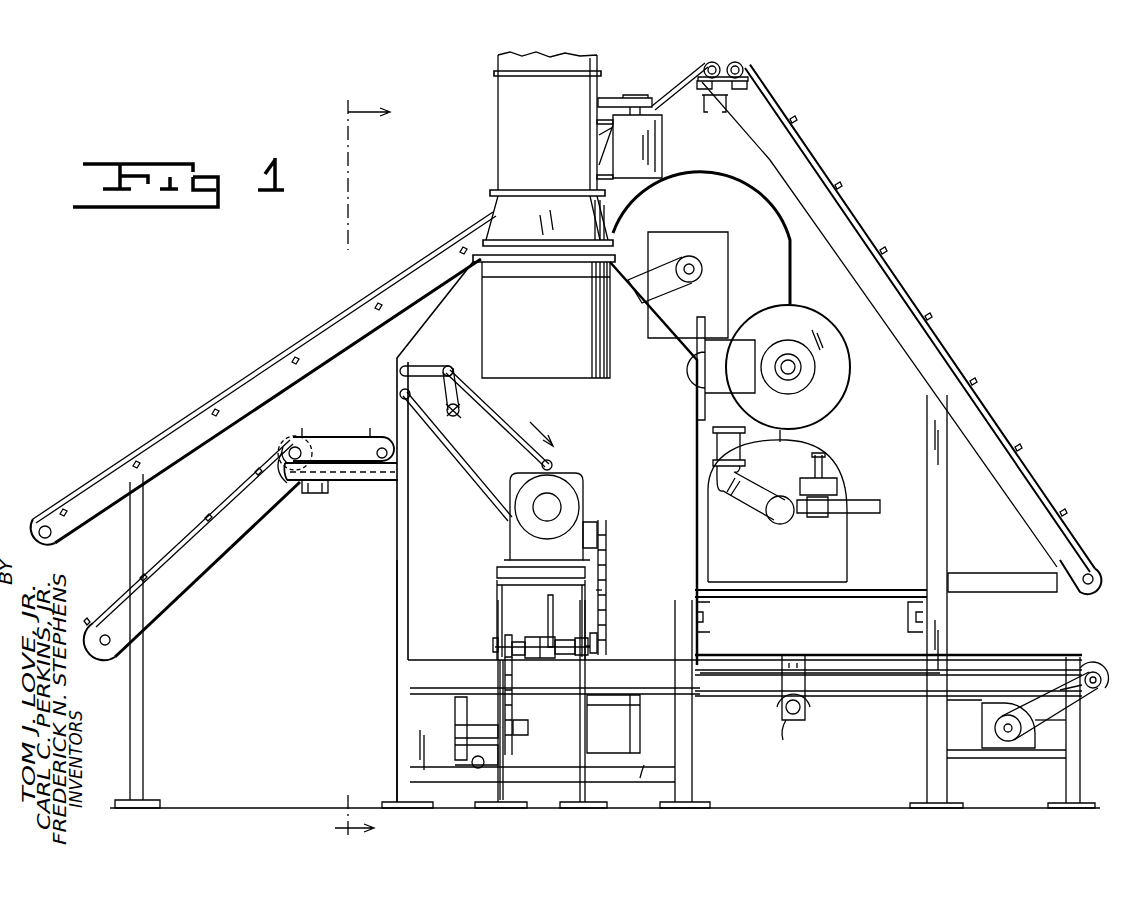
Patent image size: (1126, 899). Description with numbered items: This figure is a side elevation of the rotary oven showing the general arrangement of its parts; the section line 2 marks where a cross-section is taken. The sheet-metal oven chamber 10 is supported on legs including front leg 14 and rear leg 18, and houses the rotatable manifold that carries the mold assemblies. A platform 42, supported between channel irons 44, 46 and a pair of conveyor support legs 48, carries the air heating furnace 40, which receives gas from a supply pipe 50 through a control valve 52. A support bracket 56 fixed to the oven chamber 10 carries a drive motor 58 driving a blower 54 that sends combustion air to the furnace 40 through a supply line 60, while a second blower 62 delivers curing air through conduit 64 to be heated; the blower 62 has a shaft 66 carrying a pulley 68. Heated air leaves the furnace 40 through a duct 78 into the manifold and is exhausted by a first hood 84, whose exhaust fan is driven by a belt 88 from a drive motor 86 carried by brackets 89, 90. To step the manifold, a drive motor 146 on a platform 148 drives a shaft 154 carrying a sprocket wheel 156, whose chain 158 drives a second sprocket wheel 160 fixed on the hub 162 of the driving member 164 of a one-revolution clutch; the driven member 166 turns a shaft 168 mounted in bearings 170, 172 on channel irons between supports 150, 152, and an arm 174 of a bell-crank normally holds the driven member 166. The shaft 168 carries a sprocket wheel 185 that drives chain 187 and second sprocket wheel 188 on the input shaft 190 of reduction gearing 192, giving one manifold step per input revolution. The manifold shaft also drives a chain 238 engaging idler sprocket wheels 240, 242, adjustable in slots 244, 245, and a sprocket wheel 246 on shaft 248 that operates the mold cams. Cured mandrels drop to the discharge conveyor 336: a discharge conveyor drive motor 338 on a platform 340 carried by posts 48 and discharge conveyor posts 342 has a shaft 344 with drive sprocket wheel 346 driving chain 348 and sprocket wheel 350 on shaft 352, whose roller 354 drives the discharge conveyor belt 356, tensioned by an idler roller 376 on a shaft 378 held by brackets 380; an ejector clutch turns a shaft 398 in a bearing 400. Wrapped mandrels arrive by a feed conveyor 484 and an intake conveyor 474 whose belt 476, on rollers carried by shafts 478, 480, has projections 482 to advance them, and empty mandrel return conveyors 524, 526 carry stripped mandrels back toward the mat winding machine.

The section line 2- 2 is at (373, 469).
The oven chamber 10 is at (404, 338).
The front leg 14 is at (400, 738).
The rear leg 18 is at (696, 755).
The air heating furnace 40 is at (850, 562).
The platform 42 is at (812, 598).
The channel iron 44 is at (712, 630).
The channel iron 46 is at (906, 622).
The conveyor support legs 48 is at (948, 645).
The supply pipe 50 is at (868, 495).
The control valve 52 is at (840, 480).
The blower 54 is at (835, 360).
The support bracket 56 is at (713, 340).
The drive motor 58 is at (815, 335).
The supply line 60 is at (748, 470).
The blower 62 is at (782, 240).
The conduit 64 is at (790, 440).
The shaft 66 is at (702, 268).
The pulley 68 is at (695, 260).
The duct 78 is at (700, 563).
The first hood 84 is at (470, 247).
The drive motor 86 is at (664, 160).
The belt 88 is at (618, 98).
The bracket 89 is at (590, 125).
The bracket 90 is at (597, 177).
The drive motor 146 is at (610, 755).
The platform 148 is at (643, 780).
The support 150 is at (490, 808).
The support 152 is at (575, 808).
The shaft 154 is at (528, 728).
The sprocket wheel 156 is at (508, 765).
The chain 158 is at (515, 706).
The second sprocket wheel 160 is at (518, 640).
The hub 162 is at (510, 636).
The driving member 164 is at (532, 660).
The driven member 166 is at (552, 660).
The shaft 168 is at (568, 640).
The bearing 170 is at (493, 645).
The bearing 172 is at (608, 632).
The arm 174 is at (546, 600).
The sprocket wheel 185 is at (608, 650).
The chain 187 is at (608, 605).
The second sprocket wheel 188 is at (608, 552).
The input shaft 190 is at (597, 528).
The reduction gearing 192 is at (585, 497).
The chain 238 is at (510, 398).
The idler sprocket wheel 240 is at (466, 352).
The idler sprocket wheel 242 is at (400, 393).
The slot 244 is at (432, 366).
The slot 245 is at (438, 473).
The sprocket wheel 246 is at (496, 382).
The shaft 248 is at (458, 418).
The discharge conveyor 336 is at (1013, 652).
The discharge conveyor drive motor 338 is at (982, 728).
The platform 340 is at (1030, 762).
The discharge conveyor posts 342 is at (1040, 730).
The shaft 344 is at (1000, 745).
The drive sprocket wheel 346 is at (1040, 738).
The chain 348 is at (1060, 705).
The sprocket wheel 350 is at (1085, 684).
The shaft 352 is at (1100, 668).
The roller 354 is at (1090, 660).
The discharge conveyor belt 356 is at (880, 700).
The idler roller 376 is at (778, 712).
The shaft 378 is at (805, 715).
The brackets 380 is at (808, 665).
The shaft 398 is at (470, 770).
The bearing 400 is at (455, 752).
The intake conveyor 474 is at (332, 423).
The belt 476 is at (370, 438).
The shaft 478 is at (285, 485).
The shaft 480 is at (380, 466).
The projections 482 is at (290, 433).
The feed conveyor 484 is at (204, 553).
The empty mandrel return conveyor 524 is at (997, 394).
The empty mandrel return conveyor 526 is at (293, 312).